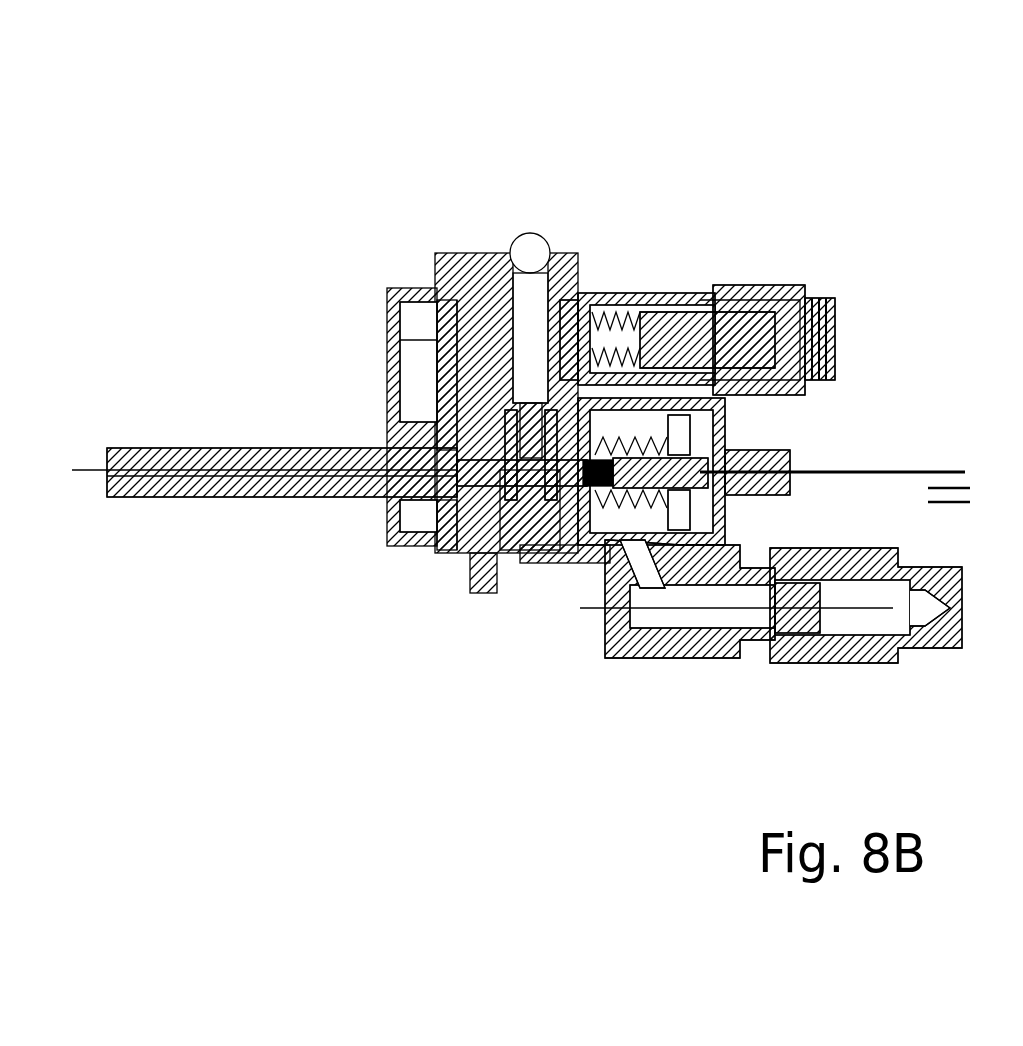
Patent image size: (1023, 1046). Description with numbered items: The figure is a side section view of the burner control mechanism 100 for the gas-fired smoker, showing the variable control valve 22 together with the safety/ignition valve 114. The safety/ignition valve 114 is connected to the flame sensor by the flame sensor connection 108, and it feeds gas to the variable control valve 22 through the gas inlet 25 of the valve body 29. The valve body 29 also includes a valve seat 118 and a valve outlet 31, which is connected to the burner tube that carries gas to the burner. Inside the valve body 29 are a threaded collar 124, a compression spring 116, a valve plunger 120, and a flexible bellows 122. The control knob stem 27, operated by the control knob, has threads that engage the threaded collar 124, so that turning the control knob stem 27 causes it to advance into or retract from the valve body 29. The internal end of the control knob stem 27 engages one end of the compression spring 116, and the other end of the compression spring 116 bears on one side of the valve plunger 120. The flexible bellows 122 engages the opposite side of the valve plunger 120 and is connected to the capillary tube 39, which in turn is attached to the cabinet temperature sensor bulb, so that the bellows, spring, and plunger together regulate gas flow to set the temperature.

The burner control mechanism 100 is at (803, 150).
The variable control valve 22 is at (452, 597).
The gas inlet 25 is at (530, 398).
The control knob stem 27 is at (200, 447).
The valve body 29 is at (397, 545).
The valve outlet 31 is at (883, 617).
The capillary tube 39 is at (912, 468).
The flame sensor connection 108 is at (838, 330).
The safety/ignition valve 114 is at (643, 280).
The compression spring 116 is at (545, 500).
The valve seat 118 is at (578, 298).
The valve plunger 120 is at (652, 365).
The flexible bellows 122 is at (688, 468).
The threaded collar 124 is at (436, 440).